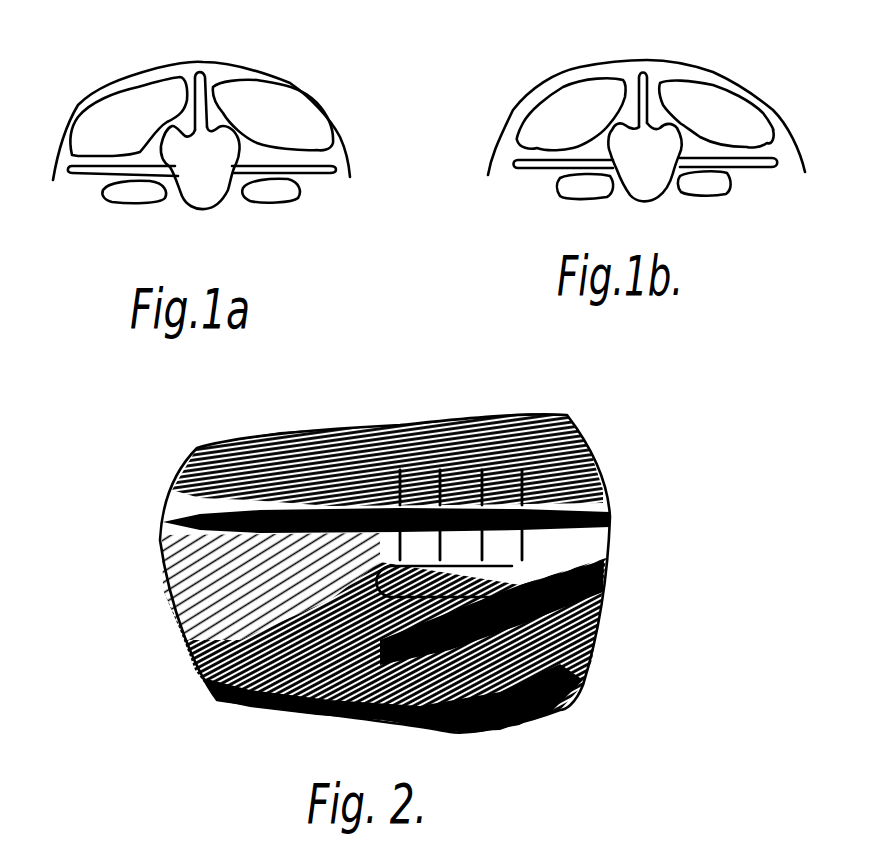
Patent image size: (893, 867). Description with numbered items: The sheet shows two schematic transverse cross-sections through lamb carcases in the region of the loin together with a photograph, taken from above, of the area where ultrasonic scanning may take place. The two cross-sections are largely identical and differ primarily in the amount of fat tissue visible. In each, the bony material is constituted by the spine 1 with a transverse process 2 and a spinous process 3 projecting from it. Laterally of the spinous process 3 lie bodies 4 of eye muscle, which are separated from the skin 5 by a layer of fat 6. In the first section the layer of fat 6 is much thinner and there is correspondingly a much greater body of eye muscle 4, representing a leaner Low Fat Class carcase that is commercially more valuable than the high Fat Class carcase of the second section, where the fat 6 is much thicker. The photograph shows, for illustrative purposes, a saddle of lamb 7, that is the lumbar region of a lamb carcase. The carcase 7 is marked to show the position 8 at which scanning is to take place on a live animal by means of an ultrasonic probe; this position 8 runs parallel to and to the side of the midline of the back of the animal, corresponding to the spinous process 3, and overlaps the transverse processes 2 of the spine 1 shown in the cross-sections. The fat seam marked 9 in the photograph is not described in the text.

In FIG. 1A, the spine 1 is at (200, 180).
In FIG. 1B, the spine 1 is at (341, 100).
In FIG. 1A, the transverse process 2 is at (78, 180).
In FIG. 1B, the transverse process 2 is at (646, 178).
In FIG. 1A, the spinous process 3 is at (193, 127).
In FIG. 1B, the spinous process 3 is at (643, 100).
In FIG. 1A, the bodies of eye muscle 4 is at (273, 115).
In FIG. 1B, the bodies of eye muscle 4 is at (748, 133).
In FIG. 1A, the skin 5 is at (114, 93).
In FIG. 1B, the skin 5 is at (646, 117).
In FIG. 1A, the layer of fat 6 is at (93, 78).
In FIG. 1B, the layer of fat 6 is at (577, 78).
In FIG. 2, the saddle of lamb 7 is at (558, 662).
In FIG. 2, the position 8 is at (487, 582).
In FIG. 2, the fat seam 9 is at (630, 515).